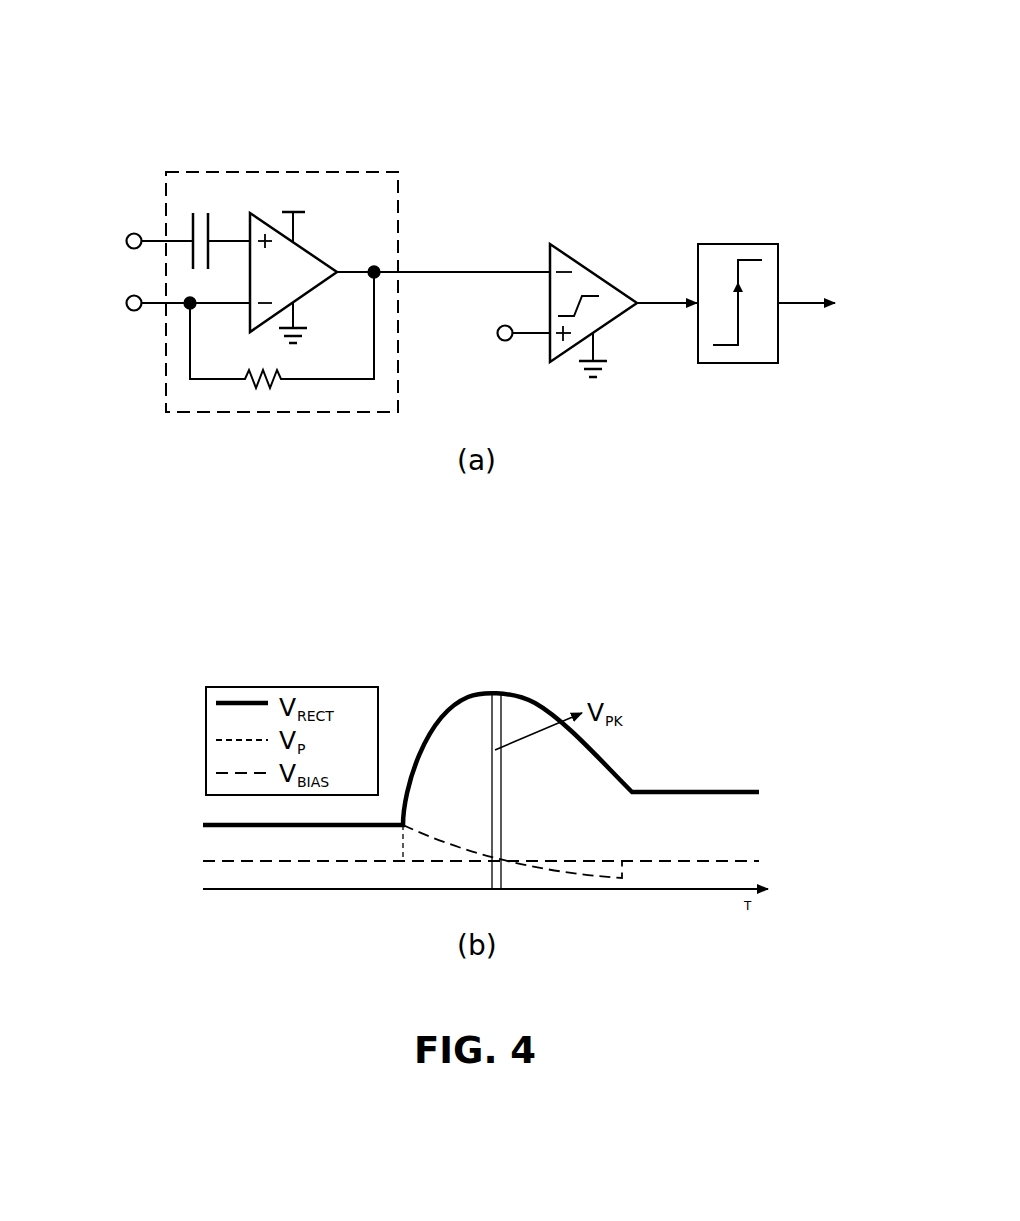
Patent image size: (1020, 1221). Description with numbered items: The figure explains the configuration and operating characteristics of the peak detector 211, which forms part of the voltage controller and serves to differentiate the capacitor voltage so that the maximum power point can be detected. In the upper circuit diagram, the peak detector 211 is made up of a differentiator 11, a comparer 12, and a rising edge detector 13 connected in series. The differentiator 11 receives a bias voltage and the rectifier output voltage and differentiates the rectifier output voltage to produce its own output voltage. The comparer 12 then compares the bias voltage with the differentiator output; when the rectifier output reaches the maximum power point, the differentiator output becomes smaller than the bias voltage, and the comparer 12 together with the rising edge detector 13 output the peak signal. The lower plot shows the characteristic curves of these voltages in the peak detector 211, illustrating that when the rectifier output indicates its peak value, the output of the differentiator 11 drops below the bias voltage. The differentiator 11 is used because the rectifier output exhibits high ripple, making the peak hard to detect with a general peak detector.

The peak detector 211 is at (839, 58).
The differentiator 11 is at (357, 171).
The comparer 12 is at (595, 268).
The rising edge detector 13 is at (753, 244).